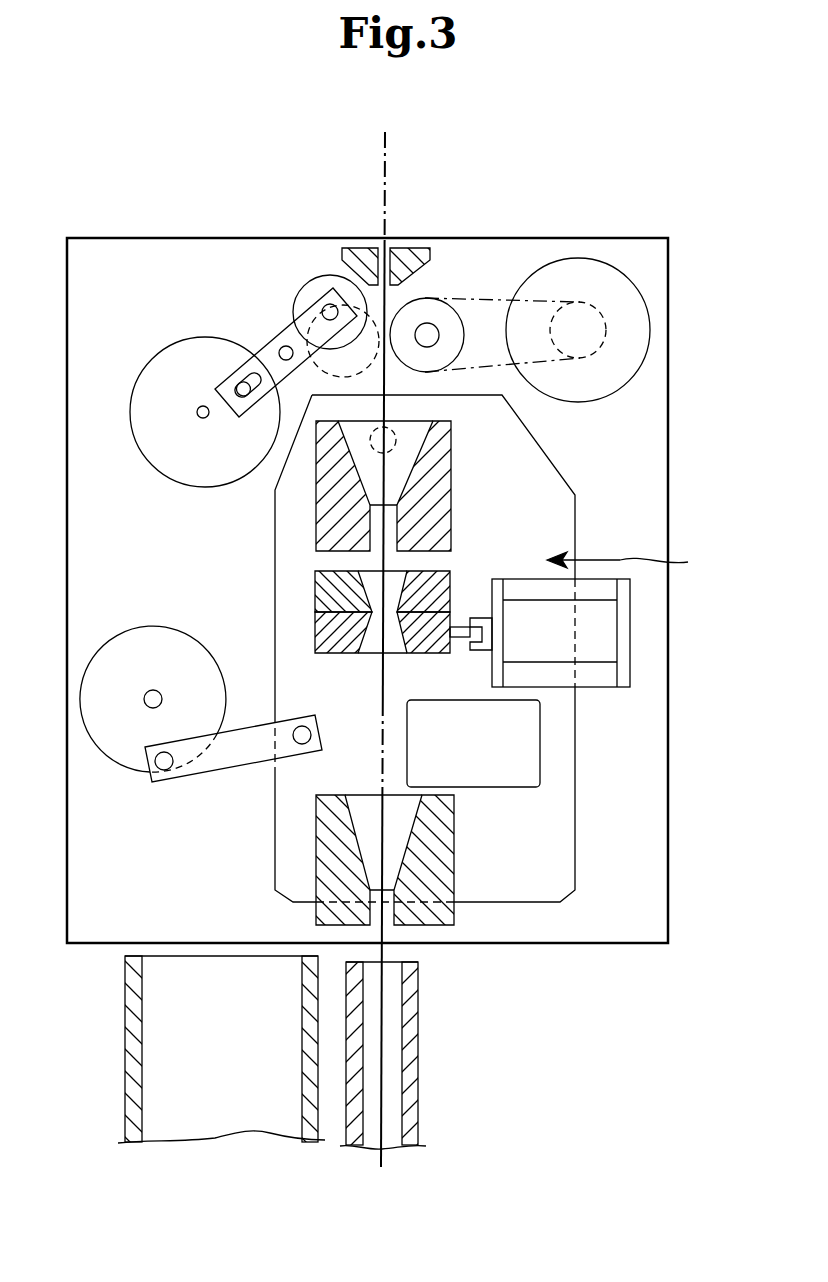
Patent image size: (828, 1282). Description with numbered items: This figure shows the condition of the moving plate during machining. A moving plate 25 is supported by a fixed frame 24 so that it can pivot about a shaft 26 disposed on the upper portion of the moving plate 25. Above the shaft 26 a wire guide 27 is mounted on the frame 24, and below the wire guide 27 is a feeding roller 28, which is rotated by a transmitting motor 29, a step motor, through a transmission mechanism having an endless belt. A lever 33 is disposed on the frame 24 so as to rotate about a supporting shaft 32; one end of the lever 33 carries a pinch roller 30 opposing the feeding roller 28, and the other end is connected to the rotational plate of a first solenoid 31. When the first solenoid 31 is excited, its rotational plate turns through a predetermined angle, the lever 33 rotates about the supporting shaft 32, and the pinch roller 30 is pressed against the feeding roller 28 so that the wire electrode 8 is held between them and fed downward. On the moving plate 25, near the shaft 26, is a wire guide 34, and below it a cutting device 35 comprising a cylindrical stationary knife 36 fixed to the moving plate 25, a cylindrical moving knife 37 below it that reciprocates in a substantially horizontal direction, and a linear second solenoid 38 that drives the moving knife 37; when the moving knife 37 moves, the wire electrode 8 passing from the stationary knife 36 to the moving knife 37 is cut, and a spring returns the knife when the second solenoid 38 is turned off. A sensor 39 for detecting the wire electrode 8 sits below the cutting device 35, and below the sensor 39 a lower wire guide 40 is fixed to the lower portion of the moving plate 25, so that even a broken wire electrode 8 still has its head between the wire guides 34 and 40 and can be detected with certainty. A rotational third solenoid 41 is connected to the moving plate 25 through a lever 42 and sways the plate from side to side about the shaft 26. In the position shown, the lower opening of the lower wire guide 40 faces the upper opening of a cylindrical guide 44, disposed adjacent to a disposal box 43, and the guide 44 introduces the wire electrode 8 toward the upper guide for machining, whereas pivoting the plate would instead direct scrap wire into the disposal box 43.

The wire electrode 8 is at (388, 158).
The fixed frame 24 is at (140, 238).
The moving plate 25 is at (573, 508).
The shaft 26 is at (397, 441).
The wire guide 27 is at (412, 250).
The feeding roller 28 is at (437, 312).
The transmitting motor 29 is at (592, 278).
The pinch roller 30 is at (318, 277).
The first solenoid 31 is at (163, 380).
The supporting shaft 32 is at (270, 340).
The lever 33 is at (276, 337).
The wire guide 34 is at (332, 513).
The cutting device 35 is at (633, 564).
The stationary knife 36 is at (325, 590).
The moving knife 37 is at (325, 631).
The second solenoid 38 is at (630, 633).
The sensor 39 is at (520, 750).
The lower wire guide 40 is at (438, 878).
The third solenoid 41 is at (130, 652).
The lever 42 is at (228, 752).
The disposal box 43 is at (130, 1058).
The cylindrical guide 44 is at (421, 1100).